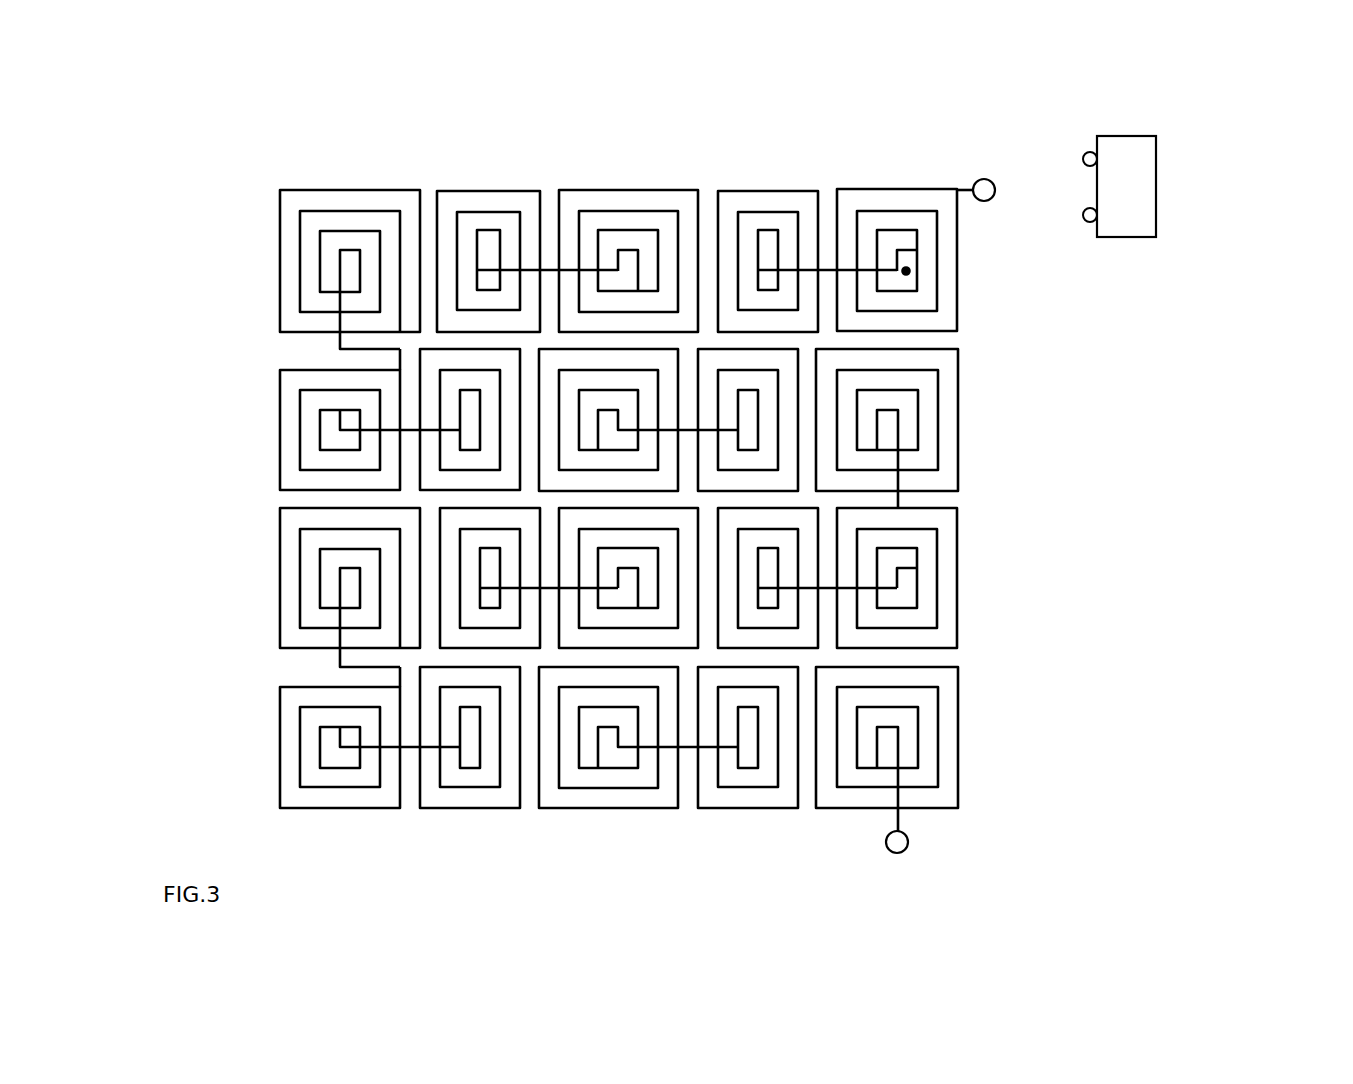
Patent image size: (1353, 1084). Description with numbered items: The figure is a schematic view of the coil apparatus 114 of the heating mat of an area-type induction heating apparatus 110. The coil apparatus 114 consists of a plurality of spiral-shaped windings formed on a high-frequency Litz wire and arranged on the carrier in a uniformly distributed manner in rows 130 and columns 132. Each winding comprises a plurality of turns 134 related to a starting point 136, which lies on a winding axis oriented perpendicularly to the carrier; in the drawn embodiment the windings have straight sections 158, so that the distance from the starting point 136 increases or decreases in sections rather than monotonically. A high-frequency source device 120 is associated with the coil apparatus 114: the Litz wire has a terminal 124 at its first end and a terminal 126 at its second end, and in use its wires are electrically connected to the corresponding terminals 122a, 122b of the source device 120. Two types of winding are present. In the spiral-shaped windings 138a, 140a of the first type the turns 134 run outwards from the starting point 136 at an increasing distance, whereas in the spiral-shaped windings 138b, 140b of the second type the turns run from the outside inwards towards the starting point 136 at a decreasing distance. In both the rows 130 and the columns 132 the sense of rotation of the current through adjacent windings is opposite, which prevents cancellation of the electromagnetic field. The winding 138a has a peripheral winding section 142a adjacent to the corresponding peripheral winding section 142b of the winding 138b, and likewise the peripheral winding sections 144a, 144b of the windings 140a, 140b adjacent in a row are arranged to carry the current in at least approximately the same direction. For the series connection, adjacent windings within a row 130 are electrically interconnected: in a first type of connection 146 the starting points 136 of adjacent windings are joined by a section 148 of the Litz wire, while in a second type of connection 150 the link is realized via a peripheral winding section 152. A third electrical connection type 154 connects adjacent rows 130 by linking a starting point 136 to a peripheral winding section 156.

The induction heating apparatus 110 is at (1203, 130).
The coil apparatus 114 is at (613, 815).
The high-frequency source device 120 is at (1130, 215).
The terminal 122a is at (1088, 152).
The terminal 122b is at (1088, 223).
The terminal 124 is at (984, 179).
The terminal 126 is at (908, 846).
The row 130 is at (262, 262).
The column 132 is at (316, 176).
The turn 134 is at (887, 190).
The starting point 136 is at (906, 271).
The spiral-shaped winding of the first type 138a is at (488, 190).
The spiral-shaped winding of the second type 138b is at (613, 211).
The spiral-shaped winding of the first type 140a is at (280, 415).
The spiral-shaped winding of the second type 140b is at (280, 568).
The peripheral winding section 142a is at (540, 213).
The peripheral winding section 142b is at (553, 200).
The peripheral winding section 144a is at (303, 490).
The peripheral winding section 144b is at (288, 508).
The first type of connection 146 is at (822, 170).
The section of the high-frequency Litz wire 148 is at (845, 272).
The second type of connection 150 is at (688, 180).
The peripheral winding section 152 is at (703, 218).
The third electrical connection type 154 is at (283, 349).
The peripheral winding section 156 is at (372, 347).
The straight section 158 is at (958, 745).